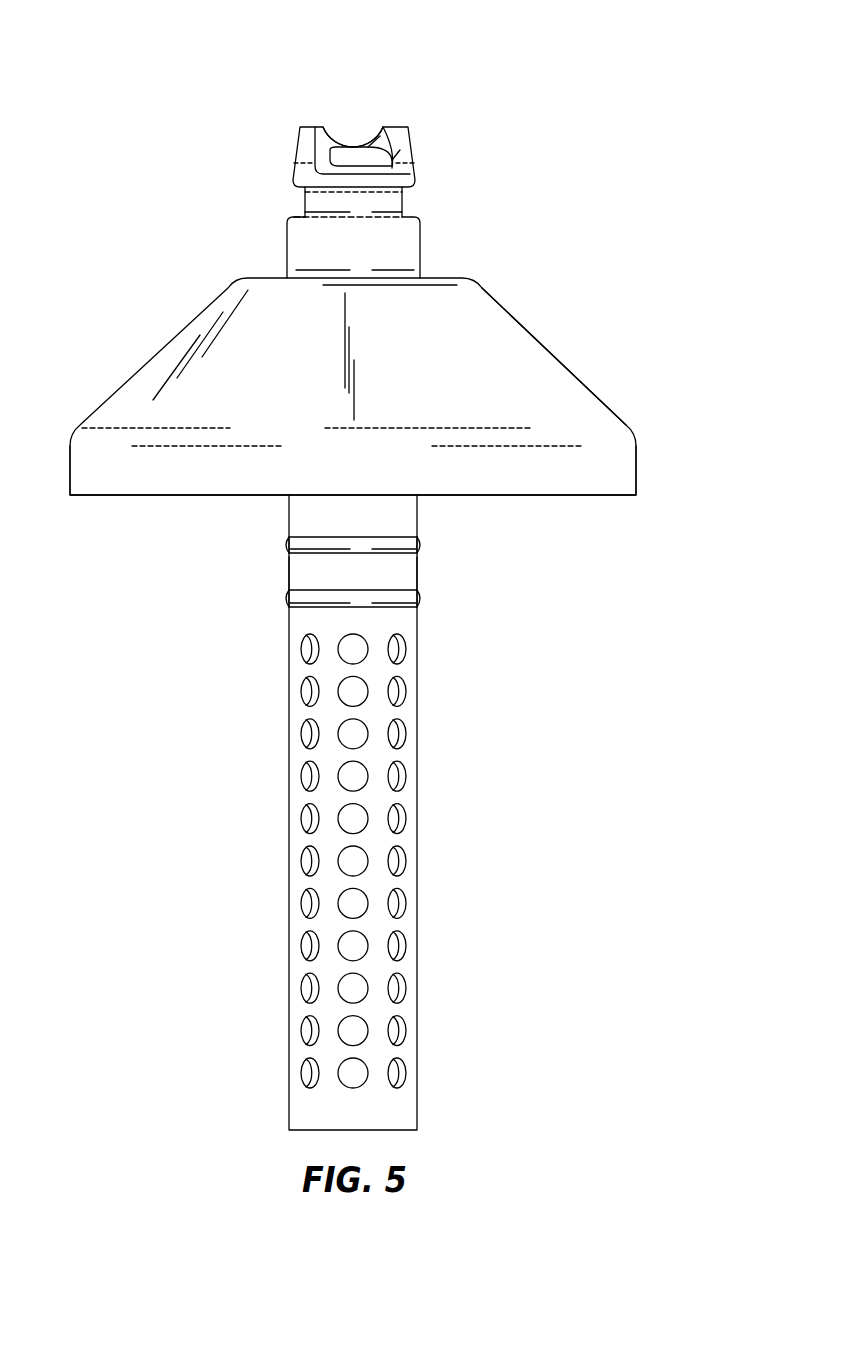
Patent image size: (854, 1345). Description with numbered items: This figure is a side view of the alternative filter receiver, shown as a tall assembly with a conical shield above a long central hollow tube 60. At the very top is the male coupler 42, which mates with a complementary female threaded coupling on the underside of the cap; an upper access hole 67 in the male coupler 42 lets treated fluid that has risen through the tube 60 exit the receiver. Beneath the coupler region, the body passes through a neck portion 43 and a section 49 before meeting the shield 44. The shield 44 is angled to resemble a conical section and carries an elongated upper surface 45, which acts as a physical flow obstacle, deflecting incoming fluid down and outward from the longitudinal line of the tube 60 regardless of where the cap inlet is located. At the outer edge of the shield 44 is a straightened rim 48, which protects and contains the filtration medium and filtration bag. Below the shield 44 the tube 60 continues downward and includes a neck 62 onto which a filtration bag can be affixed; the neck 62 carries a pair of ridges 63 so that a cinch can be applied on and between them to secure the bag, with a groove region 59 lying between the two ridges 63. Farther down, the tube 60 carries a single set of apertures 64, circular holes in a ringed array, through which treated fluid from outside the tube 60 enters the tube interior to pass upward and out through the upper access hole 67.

The male coupler 42 is at (410, 145).
The upper access hole 67 is at (355, 140).
The neck 43 is at (403, 203).
The filtration medium 49 is at (450, 278).
The upper surface 45 is at (449, 374).
The shield 44 is at (558, 360).
The straightened rim 48 is at (637, 467).
The central hollow tube 60 is at (478, 737).
The neck 62 is at (260, 570).
The ridges 63 is at (420, 542).
The groove 59 is at (418, 570).
The apertures 64 is at (405, 648).